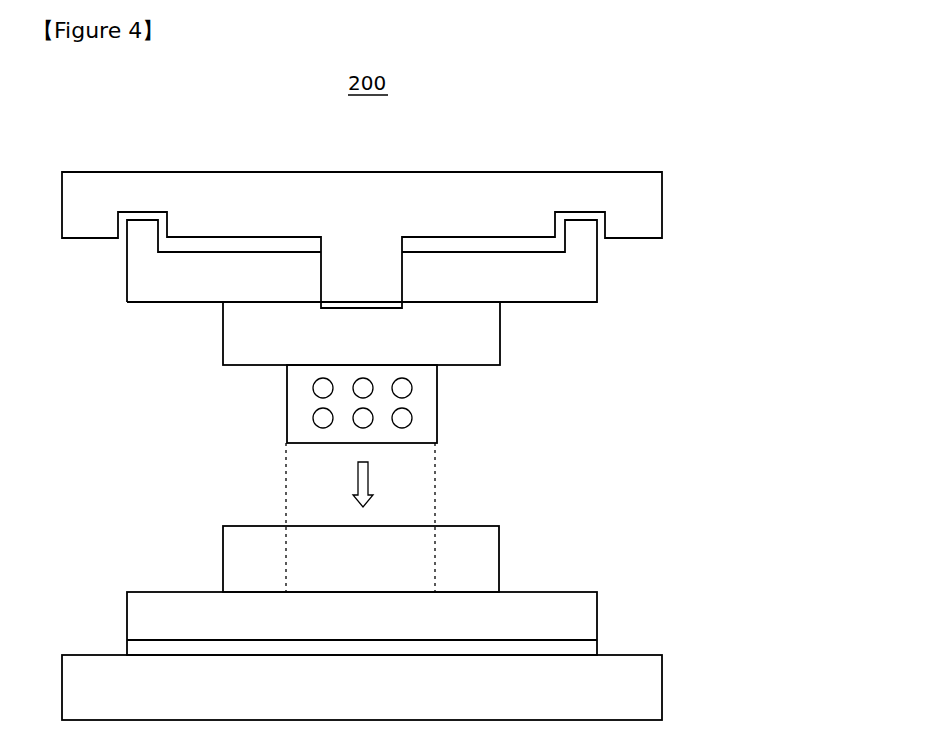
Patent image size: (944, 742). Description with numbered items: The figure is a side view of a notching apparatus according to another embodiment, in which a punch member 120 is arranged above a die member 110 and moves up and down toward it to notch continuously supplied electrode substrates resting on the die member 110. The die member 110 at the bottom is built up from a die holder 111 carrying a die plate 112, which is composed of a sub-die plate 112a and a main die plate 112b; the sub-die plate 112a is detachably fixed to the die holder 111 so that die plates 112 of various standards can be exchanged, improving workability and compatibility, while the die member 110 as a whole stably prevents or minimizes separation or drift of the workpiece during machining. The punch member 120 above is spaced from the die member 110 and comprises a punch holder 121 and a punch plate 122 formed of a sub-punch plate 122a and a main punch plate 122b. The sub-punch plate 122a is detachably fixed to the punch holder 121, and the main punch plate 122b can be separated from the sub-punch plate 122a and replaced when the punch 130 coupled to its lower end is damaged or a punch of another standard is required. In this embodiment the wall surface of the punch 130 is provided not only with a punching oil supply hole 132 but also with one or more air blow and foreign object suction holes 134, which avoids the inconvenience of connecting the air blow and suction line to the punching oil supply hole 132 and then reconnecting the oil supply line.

The die member 110 is at (463, 623).
The die holder 111 is at (429, 687).
The die plate 112 is at (462, 590).
The sub-die plate 112a is at (597, 613).
The main die plate 112b is at (499, 555).
The punch member 120 is at (465, 268).
The punch holder 121 is at (662, 200).
The punch plate 122 is at (462, 292).
The sub-punch plate 122a is at (597, 275).
The main punch plate 122b is at (500, 330).
The punch 130 is at (361, 404).
The punching oil supply hole 132 is at (313, 388).
The air blow and foreign object suction hole 134 is at (313, 418).